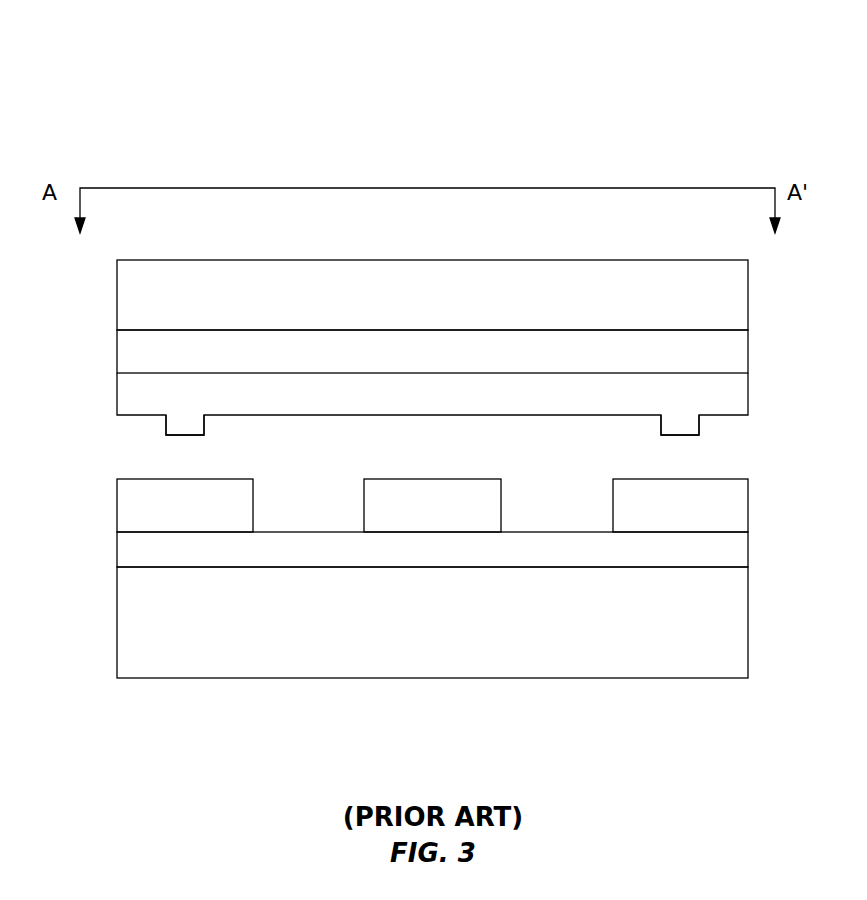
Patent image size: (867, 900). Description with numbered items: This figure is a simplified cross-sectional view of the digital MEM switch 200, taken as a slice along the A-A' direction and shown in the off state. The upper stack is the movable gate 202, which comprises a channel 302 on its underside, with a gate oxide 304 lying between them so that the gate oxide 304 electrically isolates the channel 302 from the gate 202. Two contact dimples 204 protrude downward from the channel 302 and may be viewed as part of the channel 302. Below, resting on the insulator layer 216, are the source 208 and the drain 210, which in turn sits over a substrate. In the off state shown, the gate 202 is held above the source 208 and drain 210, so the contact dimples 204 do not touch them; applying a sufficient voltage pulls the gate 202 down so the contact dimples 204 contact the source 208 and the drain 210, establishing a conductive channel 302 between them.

The digital MEM switch 200 is at (650, 84).
The gate 202 is at (117, 294).
The contact dimples 204 is at (183, 437).
The source 208 is at (191, 478).
The drain 210 is at (681, 478).
The insulator layer 216 is at (117, 548).
The channel 302 is at (117, 396).
The gate oxide 304 is at (117, 349).